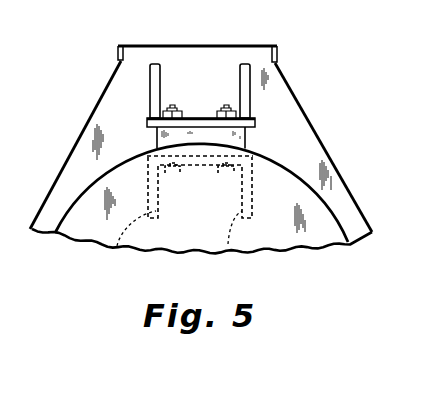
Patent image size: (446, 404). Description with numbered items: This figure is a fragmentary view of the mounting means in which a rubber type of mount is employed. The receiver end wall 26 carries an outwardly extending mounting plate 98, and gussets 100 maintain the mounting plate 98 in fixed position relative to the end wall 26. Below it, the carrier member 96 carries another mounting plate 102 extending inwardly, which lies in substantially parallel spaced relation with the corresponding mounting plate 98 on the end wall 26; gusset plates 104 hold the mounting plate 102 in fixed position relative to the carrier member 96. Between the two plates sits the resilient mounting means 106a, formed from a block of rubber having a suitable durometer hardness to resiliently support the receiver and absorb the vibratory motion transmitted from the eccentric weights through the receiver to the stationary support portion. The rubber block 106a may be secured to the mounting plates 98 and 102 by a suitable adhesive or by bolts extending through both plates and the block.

The receiver end wall 26 is at (353, 192).
The carrier member 96 is at (83, 195).
The mounting plate 98 is at (256, 120).
The gusset 100 is at (162, 74).
The mounting plate 102 is at (253, 160).
The gusset plate 104 is at (237, 268).
The resilient mounting means 106a is at (250, 137).